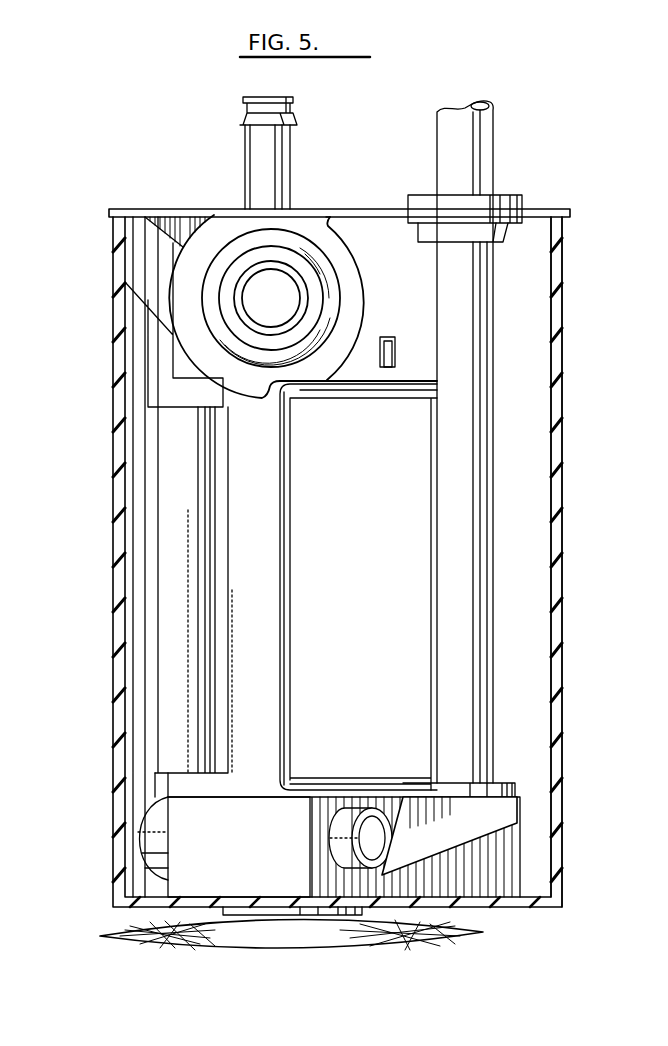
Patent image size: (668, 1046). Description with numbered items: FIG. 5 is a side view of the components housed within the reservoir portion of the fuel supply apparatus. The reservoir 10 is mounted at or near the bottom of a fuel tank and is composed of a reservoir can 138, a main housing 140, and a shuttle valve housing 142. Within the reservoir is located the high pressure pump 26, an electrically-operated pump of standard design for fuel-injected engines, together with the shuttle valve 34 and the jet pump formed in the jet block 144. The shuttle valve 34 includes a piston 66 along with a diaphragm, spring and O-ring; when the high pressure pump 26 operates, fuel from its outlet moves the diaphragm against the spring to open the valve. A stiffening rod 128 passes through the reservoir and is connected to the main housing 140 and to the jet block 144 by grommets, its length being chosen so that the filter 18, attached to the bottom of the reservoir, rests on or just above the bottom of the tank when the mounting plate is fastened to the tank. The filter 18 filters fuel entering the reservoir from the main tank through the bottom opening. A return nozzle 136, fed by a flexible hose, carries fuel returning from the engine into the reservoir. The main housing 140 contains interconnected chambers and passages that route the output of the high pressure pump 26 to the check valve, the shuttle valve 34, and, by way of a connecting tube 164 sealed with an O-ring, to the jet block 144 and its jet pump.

The reservoir 10 is at (567, 762).
The filter 18 is at (303, 949).
The high pressure pump 26 is at (366, 540).
The shuttle valve 34 is at (215, 324).
The piston 66 is at (283, 298).
The stiffening rod 128 is at (475, 610).
The return nozzle 136 is at (272, 173).
The reservoir can 138 is at (558, 462).
The main housing 140 is at (552, 207).
The shuttle valve housing 142 is at (152, 208).
The jet block 144 is at (245, 847).
The connecting tube 164 is at (168, 557).